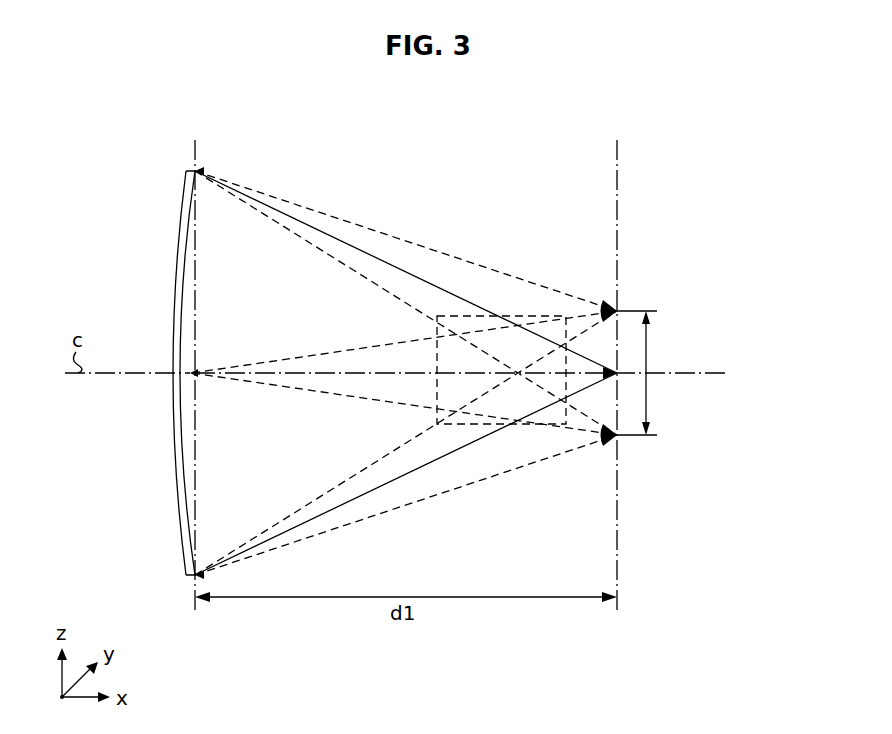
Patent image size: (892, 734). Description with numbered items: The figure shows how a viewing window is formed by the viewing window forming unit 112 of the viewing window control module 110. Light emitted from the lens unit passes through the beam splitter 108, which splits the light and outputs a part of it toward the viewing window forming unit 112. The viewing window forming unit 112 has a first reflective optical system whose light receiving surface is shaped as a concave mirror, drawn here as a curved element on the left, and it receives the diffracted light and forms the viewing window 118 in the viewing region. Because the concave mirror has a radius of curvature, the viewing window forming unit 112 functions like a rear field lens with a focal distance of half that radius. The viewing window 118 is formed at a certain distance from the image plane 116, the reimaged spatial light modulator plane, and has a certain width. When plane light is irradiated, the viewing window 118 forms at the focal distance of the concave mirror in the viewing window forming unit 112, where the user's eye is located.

The beam splitter 108 is at (437, 333).
The viewing window control module 110 is at (129, 362).
The viewing window forming unit 112 is at (176, 273).
The image plane 116 is at (195, 612).
The viewing window 118 is at (650, 311).